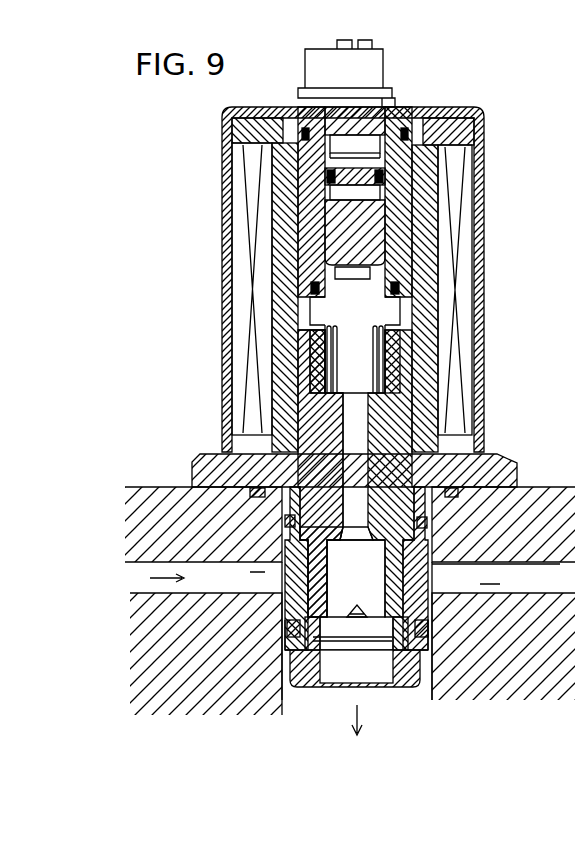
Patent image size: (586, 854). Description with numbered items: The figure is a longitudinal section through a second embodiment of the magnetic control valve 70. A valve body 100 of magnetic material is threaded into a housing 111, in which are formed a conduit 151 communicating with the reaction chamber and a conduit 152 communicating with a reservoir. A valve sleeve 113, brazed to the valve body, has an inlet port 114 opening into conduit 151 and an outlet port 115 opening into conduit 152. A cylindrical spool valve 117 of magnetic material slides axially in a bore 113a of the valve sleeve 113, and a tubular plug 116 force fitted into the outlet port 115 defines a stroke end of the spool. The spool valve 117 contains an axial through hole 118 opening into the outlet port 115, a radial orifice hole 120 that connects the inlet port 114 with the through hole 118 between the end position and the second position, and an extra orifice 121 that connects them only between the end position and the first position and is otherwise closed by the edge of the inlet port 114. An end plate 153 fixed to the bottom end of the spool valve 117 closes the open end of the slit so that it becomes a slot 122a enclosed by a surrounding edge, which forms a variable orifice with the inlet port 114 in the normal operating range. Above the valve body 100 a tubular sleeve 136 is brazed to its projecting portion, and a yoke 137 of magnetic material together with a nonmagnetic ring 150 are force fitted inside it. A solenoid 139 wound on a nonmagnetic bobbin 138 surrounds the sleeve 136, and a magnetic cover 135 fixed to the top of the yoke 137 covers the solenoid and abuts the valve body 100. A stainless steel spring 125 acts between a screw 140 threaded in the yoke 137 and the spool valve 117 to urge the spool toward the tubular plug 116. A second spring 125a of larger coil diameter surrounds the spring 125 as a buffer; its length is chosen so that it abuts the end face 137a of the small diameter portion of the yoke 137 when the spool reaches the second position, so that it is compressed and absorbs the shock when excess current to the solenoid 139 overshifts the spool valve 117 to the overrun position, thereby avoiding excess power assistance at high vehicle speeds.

The magnetic control valve 70 is at (472, 86).
The valve body 100 is at (490, 460).
The housing 111 is at (187, 495).
The valve sleeve 113 is at (203, 457).
The bore 113a is at (275, 514).
The inlet port 114 is at (265, 578).
The outlet port 115 is at (375, 677).
The tubular plug 116 is at (403, 690).
The spool valve 117 is at (395, 402).
The axial through hole 118 is at (380, 590).
The orifice hole 120 is at (327, 576).
The extra orifice 121 is at (327, 552).
The slot 122a is at (357, 612).
The spring 125 is at (392, 321).
The spring 125a is at (300, 303).
The cover 135 is at (222, 134).
The tubular sleeve 136 is at (420, 250).
The yoke 137 is at (410, 195).
The end face 137a is at (398, 300).
The bobbin 138 is at (458, 125).
The solenoid 139 is at (250, 182).
The screw 140 is at (285, 236).
The ring 150 is at (312, 342).
The conduit 151 is at (150, 588).
The conduit 152 is at (308, 690).
The end plate 153 is at (287, 633).